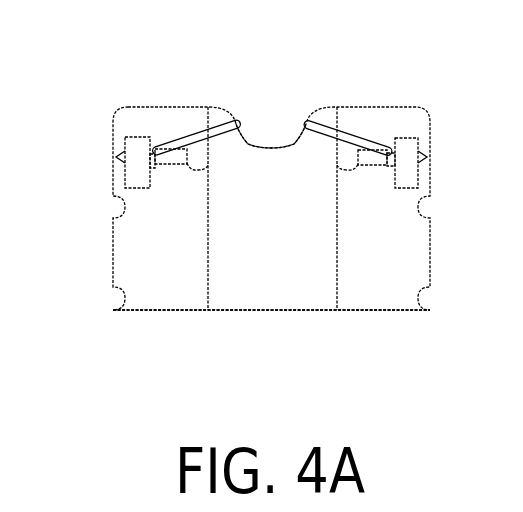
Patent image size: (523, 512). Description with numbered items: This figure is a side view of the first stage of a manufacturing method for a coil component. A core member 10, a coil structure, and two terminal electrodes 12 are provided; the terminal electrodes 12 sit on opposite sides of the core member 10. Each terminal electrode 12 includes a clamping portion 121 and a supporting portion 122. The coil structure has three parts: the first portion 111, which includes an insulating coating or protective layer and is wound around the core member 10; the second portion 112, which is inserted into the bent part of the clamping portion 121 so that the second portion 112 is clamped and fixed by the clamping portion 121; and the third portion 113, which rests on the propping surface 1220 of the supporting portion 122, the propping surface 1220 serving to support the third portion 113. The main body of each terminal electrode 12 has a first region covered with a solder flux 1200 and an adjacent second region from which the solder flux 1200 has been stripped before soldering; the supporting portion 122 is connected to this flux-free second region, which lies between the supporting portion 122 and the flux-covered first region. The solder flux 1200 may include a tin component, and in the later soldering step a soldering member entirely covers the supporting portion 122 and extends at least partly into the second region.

The core member 10 is at (272, 253).
The terminal electrode 12 is at (132, 260).
The solder flux 1200 is at (162, 292).
The propping surface 1220 is at (183, 140).
The first portion of the coil structure 111 is at (240, 122).
The second portion of the coil structure 112 is at (125, 153).
The third portion of the coil structure 113 is at (180, 146).
The clamping portion 121 is at (128, 170).
The supporting portion 122 is at (177, 167).